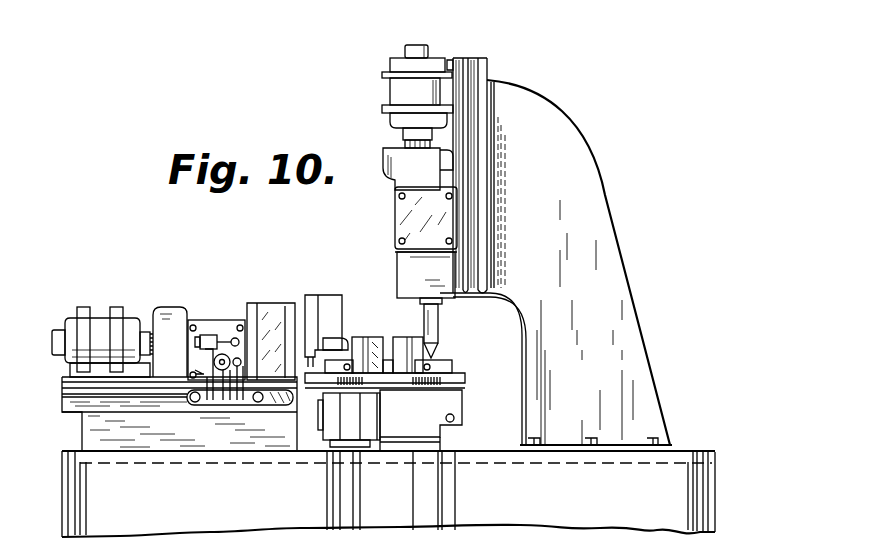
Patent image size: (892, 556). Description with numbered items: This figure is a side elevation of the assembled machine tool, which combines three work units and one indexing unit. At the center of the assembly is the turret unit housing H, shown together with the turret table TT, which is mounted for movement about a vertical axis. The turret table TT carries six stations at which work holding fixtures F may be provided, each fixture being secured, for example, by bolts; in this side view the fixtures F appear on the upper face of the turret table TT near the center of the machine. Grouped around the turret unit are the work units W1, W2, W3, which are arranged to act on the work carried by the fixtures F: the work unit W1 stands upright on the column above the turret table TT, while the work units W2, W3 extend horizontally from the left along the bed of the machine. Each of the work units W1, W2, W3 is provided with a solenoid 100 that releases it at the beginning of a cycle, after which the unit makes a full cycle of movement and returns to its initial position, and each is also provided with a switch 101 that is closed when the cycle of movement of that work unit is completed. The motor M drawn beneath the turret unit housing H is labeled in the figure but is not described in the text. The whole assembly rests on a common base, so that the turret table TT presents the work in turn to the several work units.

The work unit W1 is at (395, 228).
The work unit W2 is at (338, 320).
The work unit W3 is at (179, 334).
The solenoid 100 is at (208, 335).
The switch 101 is at (240, 367).
The work holding fixture F is at (440, 365).
The turret table TT is at (452, 373).
The turret unit housing H is at (433, 410).
The motor M is at (352, 412).